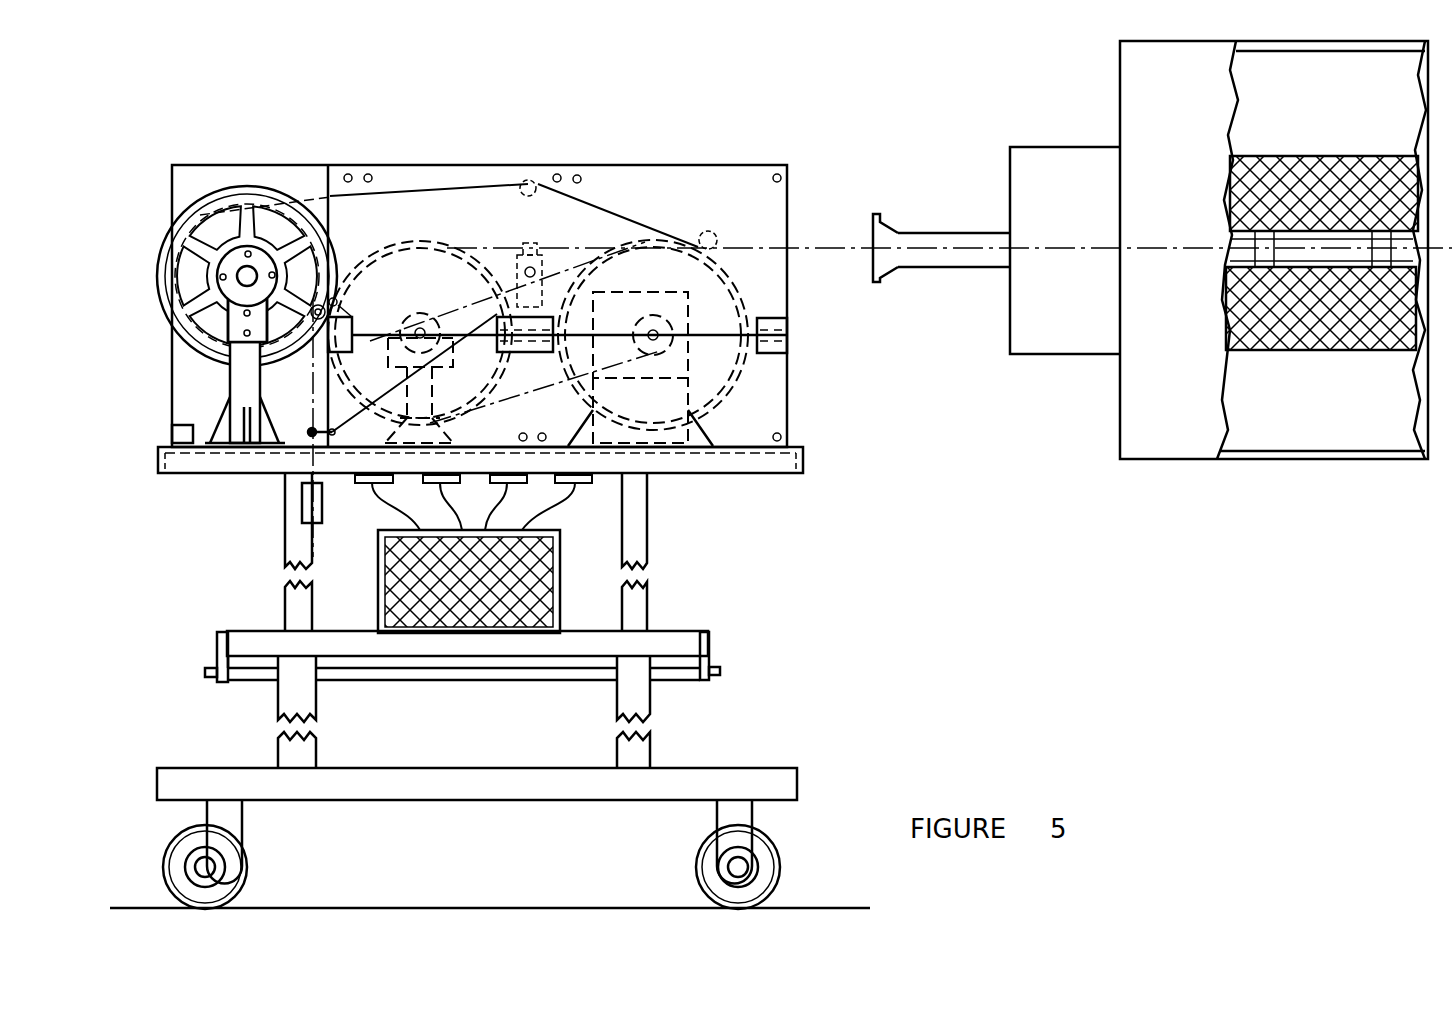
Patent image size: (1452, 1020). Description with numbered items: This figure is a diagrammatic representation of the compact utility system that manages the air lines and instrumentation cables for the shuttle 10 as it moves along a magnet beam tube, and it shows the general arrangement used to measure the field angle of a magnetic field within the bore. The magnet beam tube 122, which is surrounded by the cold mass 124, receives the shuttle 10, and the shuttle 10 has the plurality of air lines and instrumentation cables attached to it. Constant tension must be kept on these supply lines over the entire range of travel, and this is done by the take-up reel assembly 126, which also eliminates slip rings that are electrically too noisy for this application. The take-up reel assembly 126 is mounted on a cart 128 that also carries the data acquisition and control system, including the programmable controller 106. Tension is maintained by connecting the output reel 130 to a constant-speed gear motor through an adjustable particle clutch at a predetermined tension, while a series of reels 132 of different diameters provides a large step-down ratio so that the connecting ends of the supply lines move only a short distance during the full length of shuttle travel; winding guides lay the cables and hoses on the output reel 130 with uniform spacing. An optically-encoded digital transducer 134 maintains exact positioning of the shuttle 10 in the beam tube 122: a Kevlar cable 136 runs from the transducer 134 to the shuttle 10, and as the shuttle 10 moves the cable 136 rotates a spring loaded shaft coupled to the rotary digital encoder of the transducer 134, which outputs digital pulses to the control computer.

The shuttle 10 is at (1413, 238).
The programmable controller 106 is at (558, 535).
The magnet beam tube 122 is at (932, 232).
The cold mass 124 is at (1033, 147).
The take-up reel assembly 126 is at (572, 165).
The cart 128 is at (680, 736).
The output reel 130 is at (745, 297).
The series of reels 132 is at (172, 246).
The optically-encoded digital transducer 134 is at (300, 435).
The Kevlar cable 136 is at (407, 188).